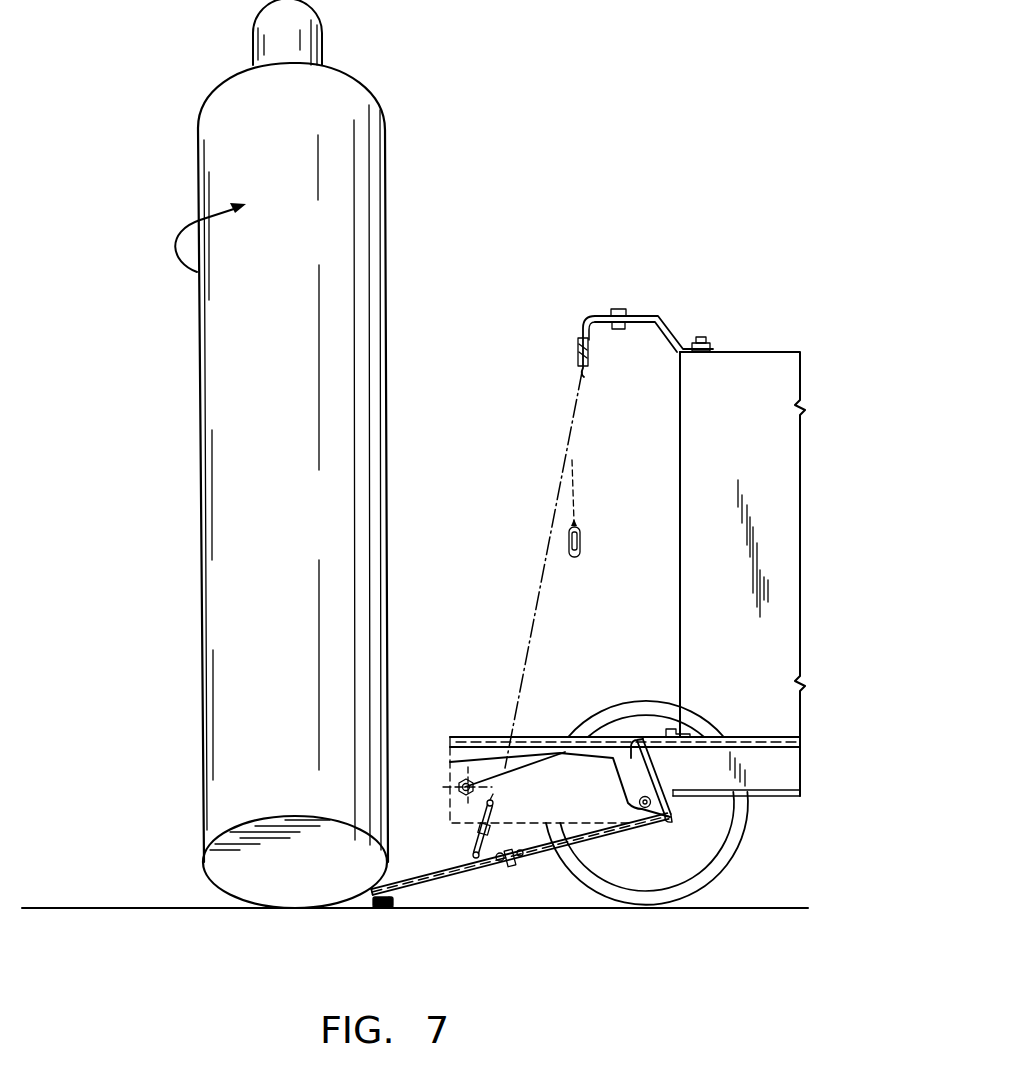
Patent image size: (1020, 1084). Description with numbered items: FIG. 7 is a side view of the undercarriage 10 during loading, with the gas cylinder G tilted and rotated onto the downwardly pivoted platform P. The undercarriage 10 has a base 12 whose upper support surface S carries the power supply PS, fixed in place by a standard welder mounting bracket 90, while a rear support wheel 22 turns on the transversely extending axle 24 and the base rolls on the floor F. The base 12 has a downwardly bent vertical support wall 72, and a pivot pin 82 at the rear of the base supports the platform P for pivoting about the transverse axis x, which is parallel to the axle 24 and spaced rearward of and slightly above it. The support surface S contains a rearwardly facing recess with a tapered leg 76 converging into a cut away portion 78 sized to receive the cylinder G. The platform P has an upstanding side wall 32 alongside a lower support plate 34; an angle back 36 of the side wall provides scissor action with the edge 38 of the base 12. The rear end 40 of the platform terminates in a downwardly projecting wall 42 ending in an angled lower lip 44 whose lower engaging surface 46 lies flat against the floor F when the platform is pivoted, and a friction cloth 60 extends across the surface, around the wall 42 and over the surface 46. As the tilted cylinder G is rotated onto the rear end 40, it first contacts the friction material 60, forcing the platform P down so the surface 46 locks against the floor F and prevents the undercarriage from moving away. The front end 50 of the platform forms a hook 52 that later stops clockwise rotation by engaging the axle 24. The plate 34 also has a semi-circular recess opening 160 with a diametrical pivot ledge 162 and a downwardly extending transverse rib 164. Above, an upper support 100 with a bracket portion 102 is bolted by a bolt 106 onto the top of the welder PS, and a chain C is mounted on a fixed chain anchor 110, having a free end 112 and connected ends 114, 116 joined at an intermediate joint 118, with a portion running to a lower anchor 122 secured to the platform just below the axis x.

The undercarriage 10 is at (792, 815).
The base 12 is at (773, 728).
The rear support wheel 22 is at (685, 887).
The axle 24 is at (651, 799).
The side wall 32 is at (430, 820).
The support plate 34 is at (458, 873).
The angle back 36 is at (673, 814).
The edge 38 is at (592, 833).
The rear end 40 is at (402, 902).
The downward projecting wall 42 is at (370, 895).
The lower lip 44 is at (389, 910).
The lower engaging surface 46 is at (380, 907).
The front end 50 is at (681, 870).
The hook 52 is at (633, 736).
The friction cloth 60 is at (420, 876).
The vertical support wall 72 is at (448, 760).
The tapered leg 76 is at (491, 767).
The cut away portion 78 is at (604, 736).
The pivot pin 82 is at (466, 777).
The welder mounting bracket 90 is at (677, 729).
The upper support 100 is at (665, 308).
The bracket portion 102 is at (688, 356).
The bolt 106 is at (703, 338).
The chain anchor 110 is at (625, 309).
The free end 112 is at (582, 552).
The connected end 114 is at (582, 330).
The connected end 116 is at (473, 855).
The intermediate joint 118 is at (574, 462).
The lower anchor 122 is at (499, 866).
The recess opening 160 is at (632, 818).
The pivot ledge 162 is at (507, 847).
The transverse rib 164 is at (518, 873).
The gas cylinder G is at (373, 258).
The floor F is at (134, 908).
The chain C is at (566, 354).
The power supply PS is at (755, 364).
The support surface S is at (722, 736).
The pivoted platform P is at (550, 868).
The transverse axis x is at (469, 778).